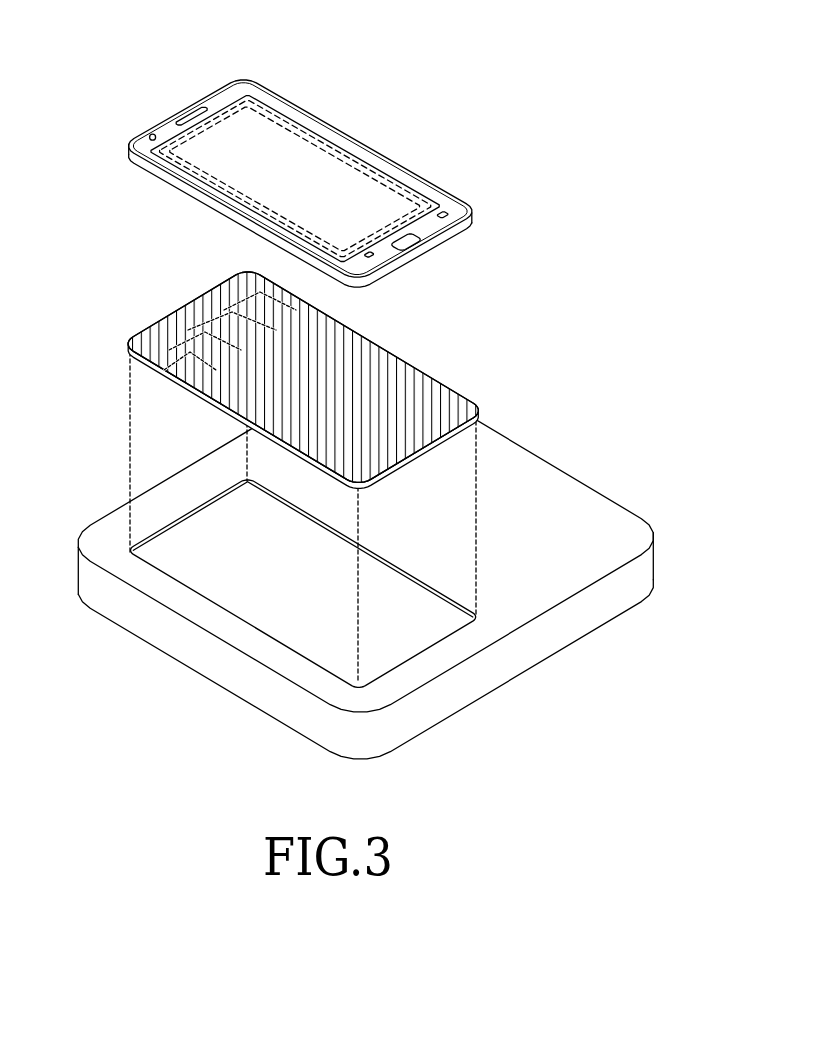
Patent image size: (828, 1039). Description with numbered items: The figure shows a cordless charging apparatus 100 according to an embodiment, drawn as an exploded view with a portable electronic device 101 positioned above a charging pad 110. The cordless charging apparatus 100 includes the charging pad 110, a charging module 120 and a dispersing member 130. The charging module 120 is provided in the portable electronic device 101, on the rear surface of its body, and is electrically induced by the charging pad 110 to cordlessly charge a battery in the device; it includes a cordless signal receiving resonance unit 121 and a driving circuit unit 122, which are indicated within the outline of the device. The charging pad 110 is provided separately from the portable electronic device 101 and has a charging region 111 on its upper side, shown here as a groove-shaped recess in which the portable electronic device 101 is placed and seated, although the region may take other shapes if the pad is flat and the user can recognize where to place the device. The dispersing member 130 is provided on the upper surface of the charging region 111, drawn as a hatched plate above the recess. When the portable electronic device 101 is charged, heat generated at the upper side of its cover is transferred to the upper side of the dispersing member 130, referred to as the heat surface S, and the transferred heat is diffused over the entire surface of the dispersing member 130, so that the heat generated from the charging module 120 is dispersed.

The cordless charging apparatus 100 is at (321, 149).
The portable electronic device 101 is at (407, 170).
The charging pad 110 is at (368, 563).
The charging region 111 is at (395, 642).
The charging module 120 is at (295, 144).
The cordless signal receiving resonance unit 121 is at (253, 106).
The driving circuit unit 122 is at (340, 143).
The dispersing member 130 is at (187, 314).
The heat surface S is at (163, 357).